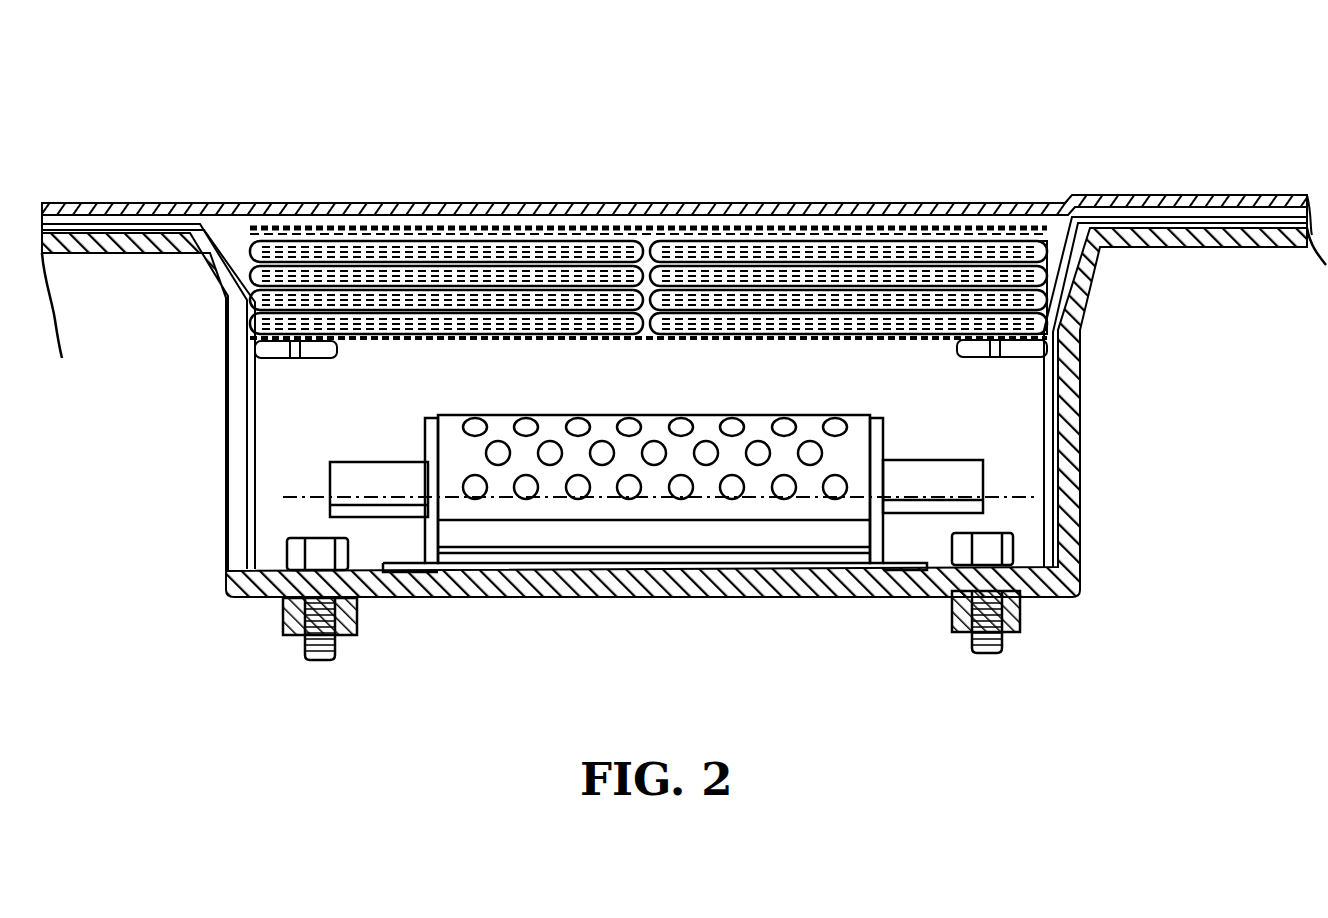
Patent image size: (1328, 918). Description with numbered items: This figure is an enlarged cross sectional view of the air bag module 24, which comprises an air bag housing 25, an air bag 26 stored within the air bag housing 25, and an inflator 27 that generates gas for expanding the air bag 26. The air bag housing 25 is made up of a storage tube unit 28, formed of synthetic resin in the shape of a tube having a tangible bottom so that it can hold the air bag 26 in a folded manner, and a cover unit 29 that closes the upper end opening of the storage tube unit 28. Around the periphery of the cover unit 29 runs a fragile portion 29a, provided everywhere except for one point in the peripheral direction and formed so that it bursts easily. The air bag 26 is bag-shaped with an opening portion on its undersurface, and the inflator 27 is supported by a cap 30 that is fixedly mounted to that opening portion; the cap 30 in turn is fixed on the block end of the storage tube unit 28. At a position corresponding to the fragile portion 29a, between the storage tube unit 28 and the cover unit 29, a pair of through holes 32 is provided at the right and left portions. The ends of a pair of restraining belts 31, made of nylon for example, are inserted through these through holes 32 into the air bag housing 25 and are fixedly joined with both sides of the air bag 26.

The air bag module 24 is at (1086, 442).
The air bag housing 25 is at (925, 207).
The air bag 26 is at (525, 232).
The inflator 27 is at (693, 413).
The storage tube unit 28 is at (1067, 427).
The cover unit 29 is at (452, 208).
The fragile portion 29a is at (1078, 200).
The cap 30 is at (262, 443).
The restraining belt 31 is at (140, 222).
The through hole 32 is at (178, 222).